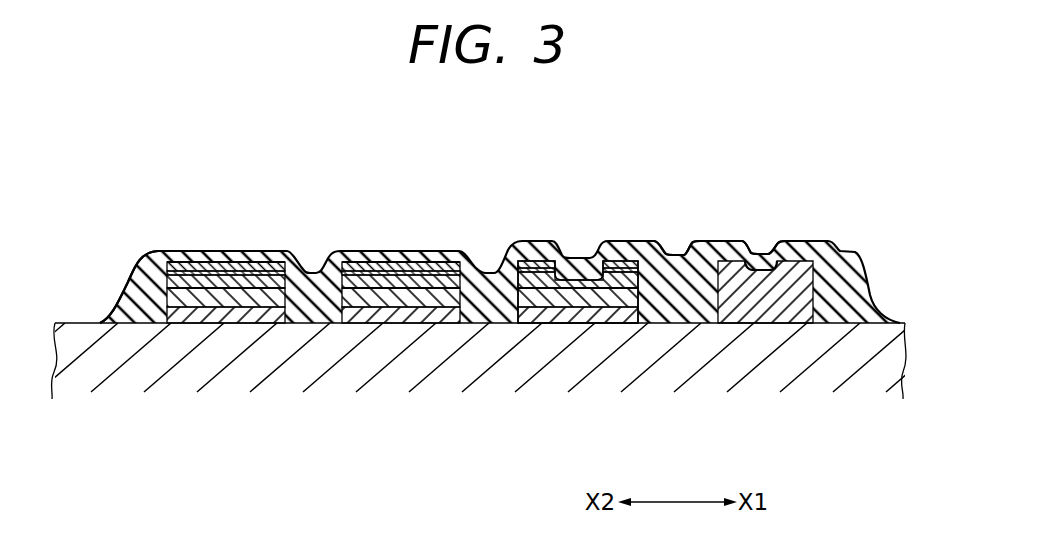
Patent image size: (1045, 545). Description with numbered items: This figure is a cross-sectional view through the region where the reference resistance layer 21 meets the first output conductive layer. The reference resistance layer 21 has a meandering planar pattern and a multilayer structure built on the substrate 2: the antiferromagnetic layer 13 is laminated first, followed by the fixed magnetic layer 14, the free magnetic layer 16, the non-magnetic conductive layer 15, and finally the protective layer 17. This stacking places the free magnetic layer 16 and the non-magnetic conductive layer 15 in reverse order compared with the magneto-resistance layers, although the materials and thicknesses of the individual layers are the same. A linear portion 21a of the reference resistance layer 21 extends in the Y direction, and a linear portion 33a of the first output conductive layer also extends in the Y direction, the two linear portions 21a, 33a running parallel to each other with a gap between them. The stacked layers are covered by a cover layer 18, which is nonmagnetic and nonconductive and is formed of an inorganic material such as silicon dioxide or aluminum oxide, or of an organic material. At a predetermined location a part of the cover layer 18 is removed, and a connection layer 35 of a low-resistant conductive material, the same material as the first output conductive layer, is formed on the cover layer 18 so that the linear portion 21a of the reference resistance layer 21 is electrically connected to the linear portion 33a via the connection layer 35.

The substrate 2 is at (78, 340).
The antiferromagnetic layer 13 is at (225, 315).
The fixed magnetic layer 14 is at (187, 300).
The non-magnetic conductive layer 15 is at (190, 263).
The free magnetic layer 16 is at (226, 268).
The protective layer 17 is at (268, 263).
The cover layer 18 is at (140, 264).
The reference resistance layer 21 is at (478, 192).
The linear portion 21a is at (666, 305).
The linear portion 33a is at (778, 305).
The connection layer 35 is at (770, 253).